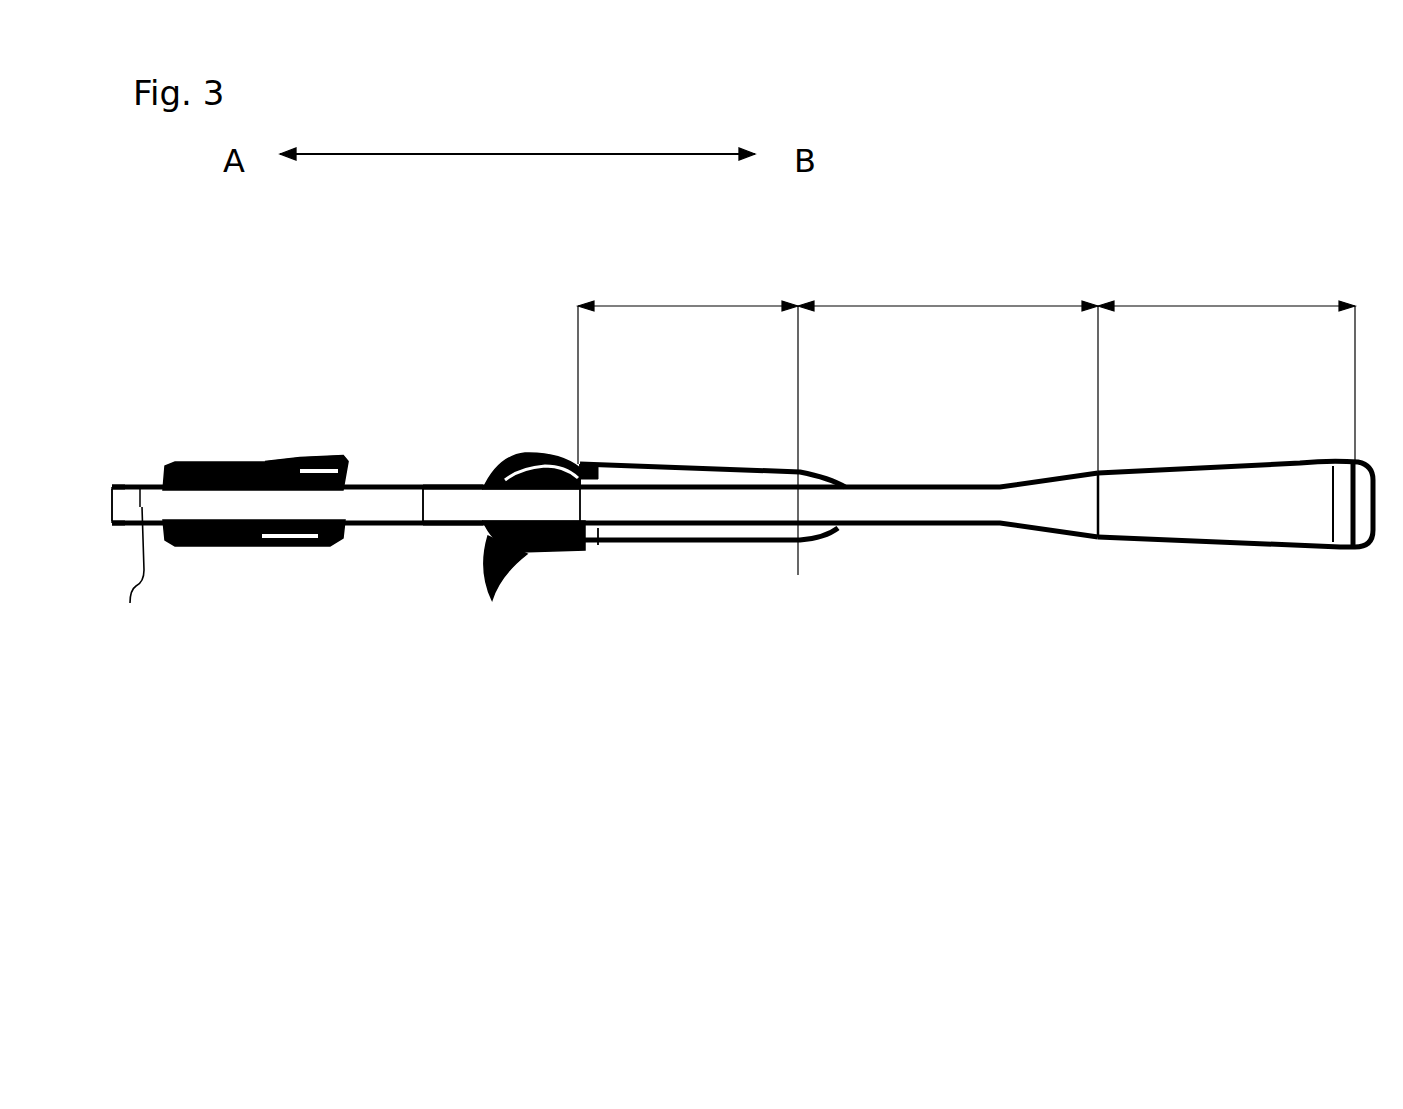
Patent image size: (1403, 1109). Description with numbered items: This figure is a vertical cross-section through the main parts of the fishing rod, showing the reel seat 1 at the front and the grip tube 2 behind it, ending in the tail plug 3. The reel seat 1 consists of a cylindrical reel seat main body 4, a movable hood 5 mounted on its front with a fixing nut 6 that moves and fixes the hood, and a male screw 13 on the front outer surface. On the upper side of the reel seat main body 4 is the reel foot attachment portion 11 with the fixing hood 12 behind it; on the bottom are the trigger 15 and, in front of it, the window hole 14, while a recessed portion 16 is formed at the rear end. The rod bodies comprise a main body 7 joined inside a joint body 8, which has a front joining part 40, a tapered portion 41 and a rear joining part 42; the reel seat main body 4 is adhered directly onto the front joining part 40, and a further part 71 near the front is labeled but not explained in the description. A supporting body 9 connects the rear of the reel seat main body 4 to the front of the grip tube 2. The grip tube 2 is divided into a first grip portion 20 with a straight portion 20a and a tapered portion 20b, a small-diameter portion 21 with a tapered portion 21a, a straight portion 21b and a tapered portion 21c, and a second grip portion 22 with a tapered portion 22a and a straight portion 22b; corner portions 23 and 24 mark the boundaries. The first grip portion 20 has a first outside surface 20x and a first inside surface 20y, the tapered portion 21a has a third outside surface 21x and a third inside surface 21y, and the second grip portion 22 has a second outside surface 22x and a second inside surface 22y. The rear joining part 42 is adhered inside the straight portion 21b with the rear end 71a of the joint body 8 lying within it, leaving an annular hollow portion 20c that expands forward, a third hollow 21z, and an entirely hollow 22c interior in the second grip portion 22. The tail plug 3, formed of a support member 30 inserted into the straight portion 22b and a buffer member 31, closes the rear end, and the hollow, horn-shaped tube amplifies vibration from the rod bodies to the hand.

The reel seat 1 is at (427, 327).
The grip tube 2 is at (1052, 249).
The tail plug 3 is at (1280, 727).
The reel seat main body 4 is at (350, 545).
The movable hood 5 is at (302, 458).
The fixing nut 6 is at (215, 462).
The main body 7 is at (140, 485).
The joint body 8 is at (455, 594).
The supporting body 9 is at (600, 545).
The reel foot attachment portion 11 is at (462, 485).
The fixing hood 12 is at (500, 455).
The male screw 13 is at (222, 545).
The window hole 14 is at (403, 545).
The trigger 15 is at (490, 582).
The recessed portion 16 is at (556, 462).
The first grip portion 20 is at (700, 303).
The straight portion 20a is at (590, 462).
The tapered portion 20b is at (698, 465).
The annular hollow portion 20c is at (632, 542).
The first outside surface 20x is at (710, 542).
The first inside surface 20y is at (745, 474).
The small-diameter portion 21 is at (955, 303).
The tapered portion 21a is at (830, 485).
The straight portion 21b is at (922, 485).
The tapered portion 21c is at (1052, 485).
The third outside surface 21x is at (807, 529).
The third inside surface 21y is at (840, 489).
The third hollow 21z is at (810, 526).
The second grip portion 22 is at (1232, 300).
The tapered portion 22a is at (1175, 470).
The straight portion 22b is at (1335, 460).
The hollow 22c is at (1190, 508).
The second outside surface 22x is at (1143, 541).
The second inside surface 22y is at (1242, 470).
The front corner portion 23 is at (805, 545).
The rear corner portion 24 is at (1093, 545).
The support member 30 is at (1330, 510).
The buffer member 31 is at (1372, 548).
The front joining part 40 is at (458, 545).
The tapered portion 41 is at (680, 545).
The rear joining part 42 is at (915, 545).
The wire 71 is at (137, 575).
The rear end 71a is at (1007, 507).